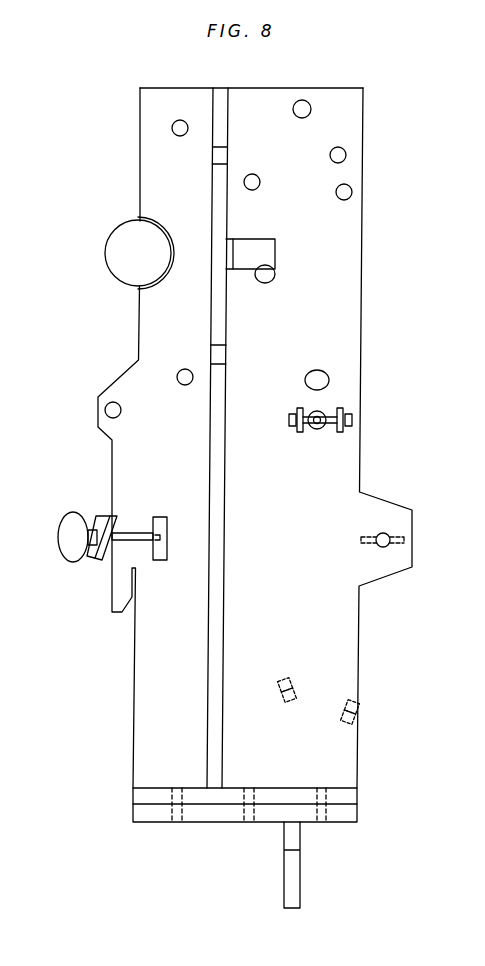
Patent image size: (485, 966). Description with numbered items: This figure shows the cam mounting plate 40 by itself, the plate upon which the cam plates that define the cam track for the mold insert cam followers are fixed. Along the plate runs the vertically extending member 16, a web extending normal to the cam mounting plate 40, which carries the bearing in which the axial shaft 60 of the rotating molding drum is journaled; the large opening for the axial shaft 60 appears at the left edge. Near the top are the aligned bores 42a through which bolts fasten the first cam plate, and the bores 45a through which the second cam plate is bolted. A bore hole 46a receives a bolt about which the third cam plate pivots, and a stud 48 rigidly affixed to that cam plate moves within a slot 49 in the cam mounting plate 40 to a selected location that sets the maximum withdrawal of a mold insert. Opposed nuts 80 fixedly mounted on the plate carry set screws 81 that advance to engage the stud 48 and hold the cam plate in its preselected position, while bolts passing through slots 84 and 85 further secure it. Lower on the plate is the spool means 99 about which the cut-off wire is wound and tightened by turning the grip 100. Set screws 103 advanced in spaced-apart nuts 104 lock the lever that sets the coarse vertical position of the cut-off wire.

The vertically extending member 16 is at (223, 605).
The cam mounting plate 40 is at (132, 695).
The aligned bores 42a is at (178, 124).
The bores 45a is at (303, 100).
The bore hole 46a is at (348, 191).
The stud 48 is at (322, 416).
The slot 49 is at (314, 430).
The axial shaft 60 is at (120, 278).
The opposed nuts 80 is at (341, 432).
The set screws 81 is at (289, 418).
The slot 84 is at (272, 283).
The slot 85 is at (318, 370).
The spool means 99 is at (128, 530).
The grip 100 is at (72, 513).
The set screws 103 is at (278, 685).
The spaced-apart nuts 104 is at (299, 672).